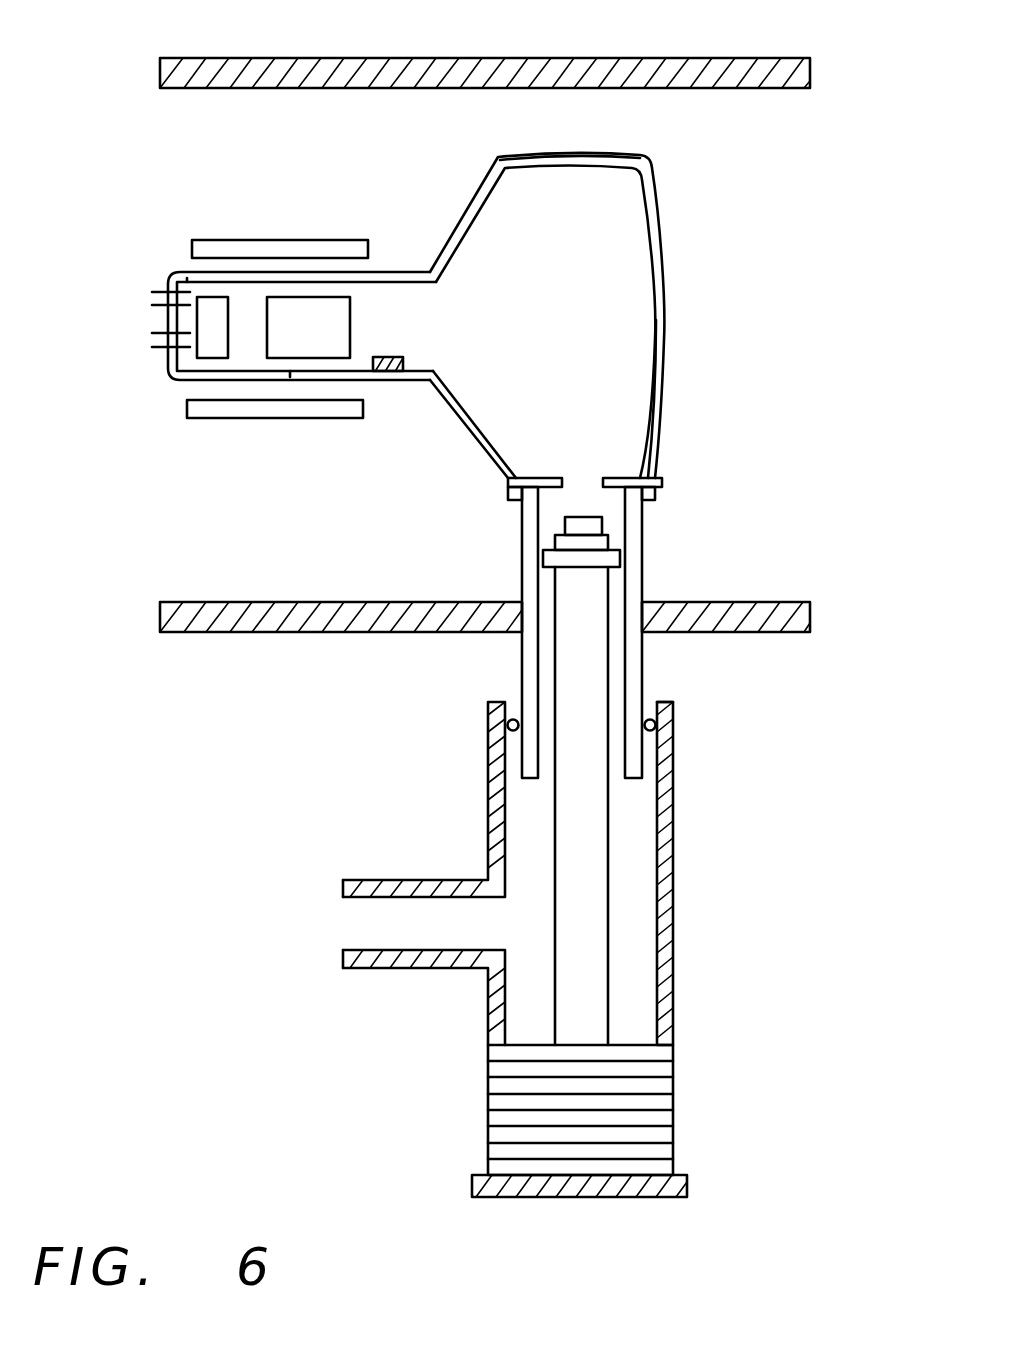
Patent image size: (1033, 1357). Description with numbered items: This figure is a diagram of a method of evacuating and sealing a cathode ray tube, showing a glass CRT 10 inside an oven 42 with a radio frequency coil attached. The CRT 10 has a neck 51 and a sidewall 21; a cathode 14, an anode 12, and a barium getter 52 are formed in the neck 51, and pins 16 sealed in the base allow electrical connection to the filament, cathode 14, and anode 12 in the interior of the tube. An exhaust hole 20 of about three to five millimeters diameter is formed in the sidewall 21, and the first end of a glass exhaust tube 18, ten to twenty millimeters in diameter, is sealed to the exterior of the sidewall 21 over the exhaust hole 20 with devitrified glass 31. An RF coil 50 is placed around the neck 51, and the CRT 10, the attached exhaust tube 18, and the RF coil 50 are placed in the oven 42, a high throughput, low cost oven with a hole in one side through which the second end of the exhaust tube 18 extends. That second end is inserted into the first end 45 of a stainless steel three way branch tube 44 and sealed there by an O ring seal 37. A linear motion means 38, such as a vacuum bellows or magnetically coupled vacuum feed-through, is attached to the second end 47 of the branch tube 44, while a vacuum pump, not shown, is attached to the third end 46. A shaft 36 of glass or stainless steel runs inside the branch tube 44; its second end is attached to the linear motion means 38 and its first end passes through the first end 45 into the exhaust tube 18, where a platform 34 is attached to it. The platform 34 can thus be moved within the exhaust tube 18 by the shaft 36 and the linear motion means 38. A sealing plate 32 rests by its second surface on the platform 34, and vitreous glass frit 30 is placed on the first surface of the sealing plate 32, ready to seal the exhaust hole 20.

The glass CRT 10 is at (665, 174).
The anode 12 is at (288, 331).
The cathode 14 is at (215, 316).
The pins 16 is at (155, 298).
The glass exhaust tube 18 is at (530, 581).
The exhaust hole 20 is at (580, 483).
The sidewall 21 is at (578, 156).
The vitreous glass frit 30 is at (588, 525).
The devitrified glass 31 is at (507, 490).
The sealing plate 32 is at (562, 538).
The platform 34 is at (601, 557).
The shaft 36 is at (572, 799).
The O ring seal 37 is at (506, 724).
The linear motion means 38 is at (620, 1084).
The oven 42 is at (690, 76).
The three way branch tube 44 is at (675, 886).
The first end of branch tube 45 is at (667, 700).
The third end of branch tube 46 is at (372, 922).
The second end of branch tube 47 is at (623, 1189).
The RF coil 50 is at (300, 249).
The neck 51 is at (187, 279).
The getter 52 is at (392, 356).